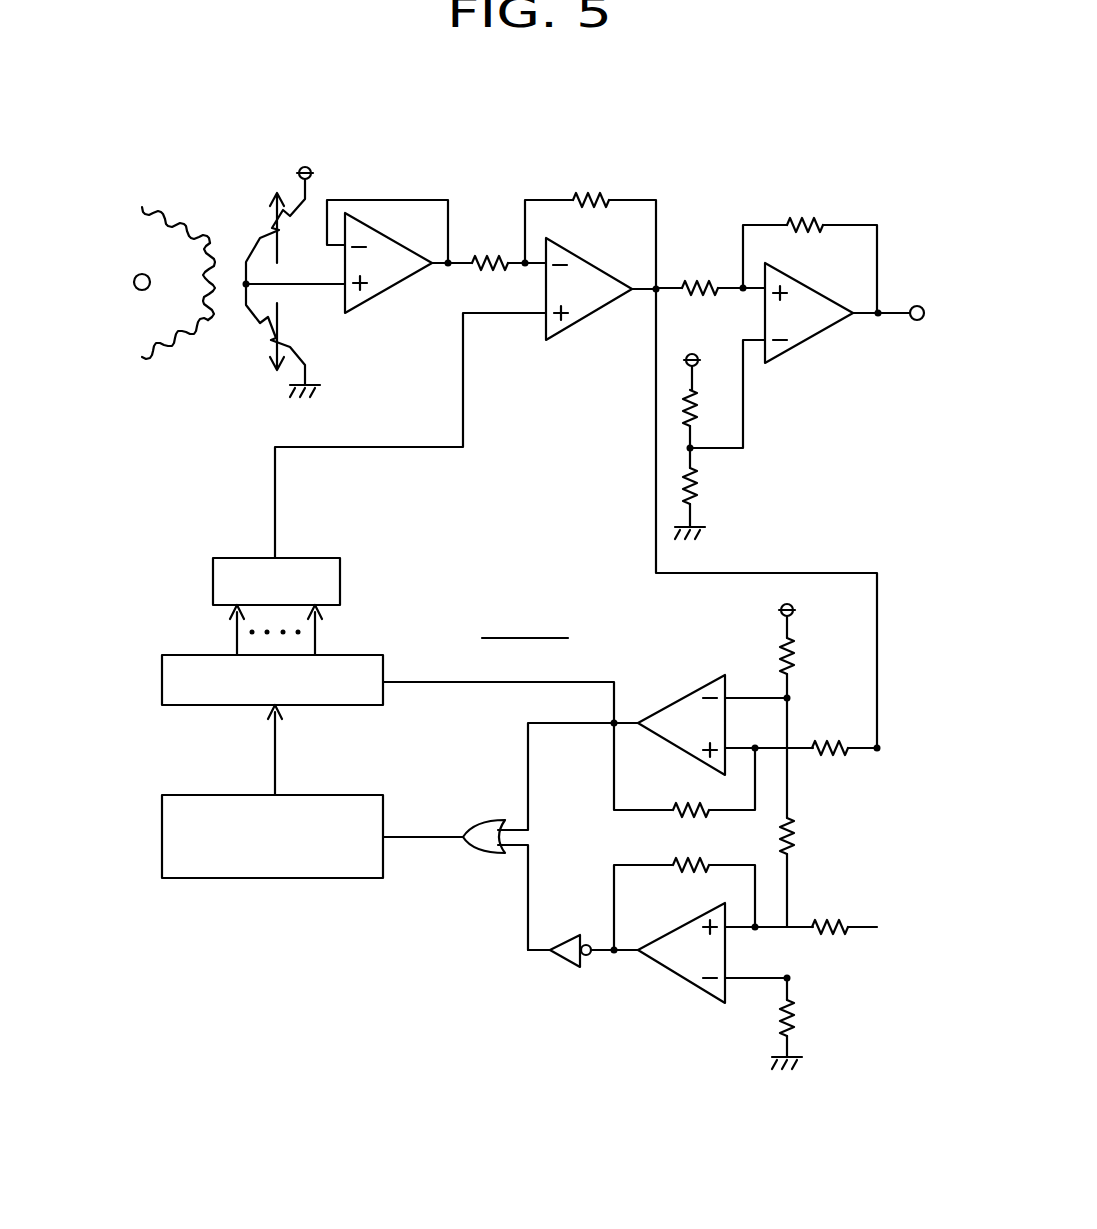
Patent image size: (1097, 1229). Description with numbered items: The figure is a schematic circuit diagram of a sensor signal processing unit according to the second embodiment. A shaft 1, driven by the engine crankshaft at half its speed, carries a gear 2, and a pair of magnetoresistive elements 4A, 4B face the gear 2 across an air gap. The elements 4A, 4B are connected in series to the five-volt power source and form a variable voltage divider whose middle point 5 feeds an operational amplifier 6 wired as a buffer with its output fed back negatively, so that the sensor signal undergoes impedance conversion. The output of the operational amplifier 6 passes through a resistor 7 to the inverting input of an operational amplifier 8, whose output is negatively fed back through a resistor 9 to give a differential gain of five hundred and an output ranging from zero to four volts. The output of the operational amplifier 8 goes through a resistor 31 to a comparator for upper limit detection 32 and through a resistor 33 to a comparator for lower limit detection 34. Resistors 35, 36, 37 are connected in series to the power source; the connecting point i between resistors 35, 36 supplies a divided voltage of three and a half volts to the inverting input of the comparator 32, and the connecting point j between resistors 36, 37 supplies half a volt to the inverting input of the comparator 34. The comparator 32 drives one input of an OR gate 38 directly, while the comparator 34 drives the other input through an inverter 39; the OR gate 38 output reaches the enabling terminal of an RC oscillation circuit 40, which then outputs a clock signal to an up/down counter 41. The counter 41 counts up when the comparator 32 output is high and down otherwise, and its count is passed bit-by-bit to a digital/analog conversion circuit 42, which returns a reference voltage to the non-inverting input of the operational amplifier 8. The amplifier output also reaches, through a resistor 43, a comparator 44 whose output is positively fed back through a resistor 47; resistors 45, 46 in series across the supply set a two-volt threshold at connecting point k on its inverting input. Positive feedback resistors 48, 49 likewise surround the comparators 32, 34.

The shaft 1 is at (148, 290).
The gear 2 is at (160, 362).
The magnetoresistive element 4A is at (270, 230).
The magnetoresistive element 4B is at (267, 330).
The middle point 5 is at (244, 282).
The operational amplifier 6 is at (393, 287).
The resistor 7 is at (478, 255).
The operational amplifier 8 is at (583, 317).
The resistor 9 is at (592, 195).
The resistor 31 is at (835, 740).
The comparator for upper limit detection 32 is at (665, 708).
The resistor 33 is at (835, 920).
The comparator for lower limit detection 34 is at (662, 968).
The resistor 35 is at (775, 655).
The resistor 36 is at (795, 832).
The resistor 37 is at (775, 1020).
The OR gate 38 is at (493, 853).
The inverter 39 is at (567, 935).
The RC oscillation circuit 40 is at (162, 837).
The up/down counter 41 is at (162, 683).
The digital/analog conversion circuit 42 is at (342, 580).
The resistor 43 is at (700, 275).
The comparator 44 is at (822, 335).
The resistor 45 is at (700, 408).
The resistor 46 is at (700, 500).
The resistor 47 is at (800, 215).
The resistor 48 is at (672, 812).
The resistor 49 is at (678, 870).
The connecting point i is at (790, 697).
The connecting point j is at (792, 978).
The connecting point k is at (695, 450).